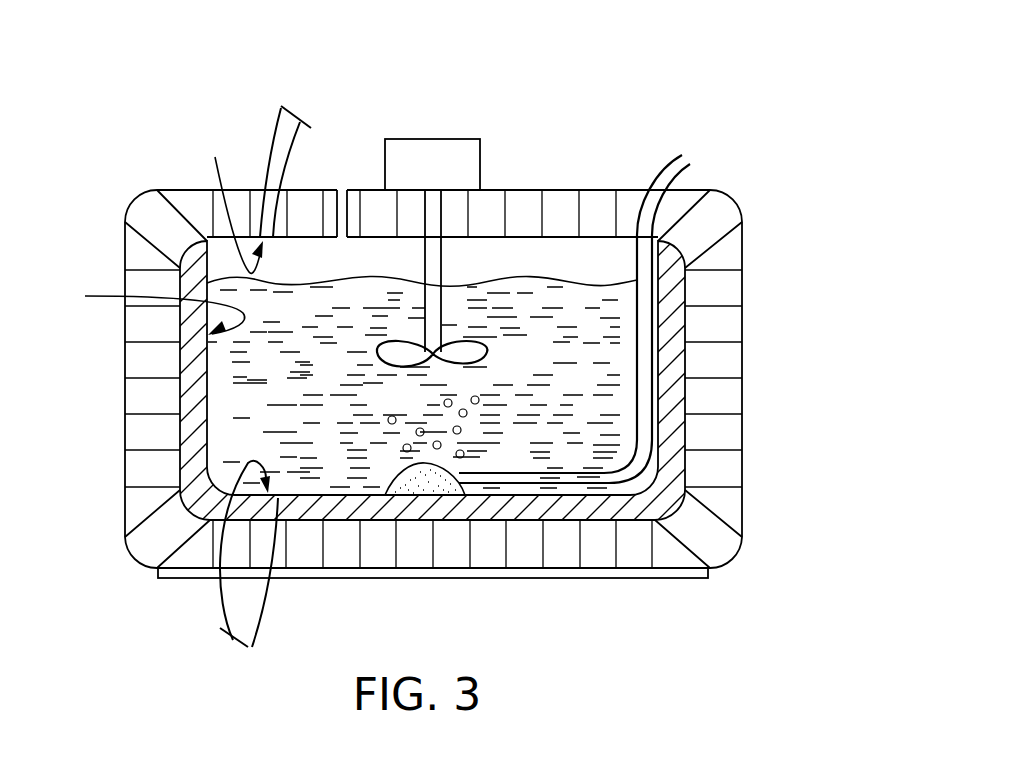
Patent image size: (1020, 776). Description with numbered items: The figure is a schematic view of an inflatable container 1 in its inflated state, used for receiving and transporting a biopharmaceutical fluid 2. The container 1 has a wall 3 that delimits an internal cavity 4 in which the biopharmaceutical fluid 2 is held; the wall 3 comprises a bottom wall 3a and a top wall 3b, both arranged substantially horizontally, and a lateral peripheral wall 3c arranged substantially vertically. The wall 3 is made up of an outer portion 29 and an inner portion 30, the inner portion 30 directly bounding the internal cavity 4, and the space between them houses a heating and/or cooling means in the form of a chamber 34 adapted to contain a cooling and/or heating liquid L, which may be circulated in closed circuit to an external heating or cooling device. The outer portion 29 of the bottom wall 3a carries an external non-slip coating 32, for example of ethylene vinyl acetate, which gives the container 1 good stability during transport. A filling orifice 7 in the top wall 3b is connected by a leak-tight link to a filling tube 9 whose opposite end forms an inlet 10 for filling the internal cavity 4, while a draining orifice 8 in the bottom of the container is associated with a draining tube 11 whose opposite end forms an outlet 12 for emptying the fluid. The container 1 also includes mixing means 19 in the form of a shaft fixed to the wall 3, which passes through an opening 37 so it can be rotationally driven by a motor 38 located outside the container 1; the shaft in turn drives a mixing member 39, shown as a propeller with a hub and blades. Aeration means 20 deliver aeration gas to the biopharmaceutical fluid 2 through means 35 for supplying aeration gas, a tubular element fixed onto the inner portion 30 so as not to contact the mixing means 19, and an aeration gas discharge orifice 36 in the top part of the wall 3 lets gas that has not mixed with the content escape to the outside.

The container 1 is at (775, 435).
The biopharmaceutical fluid 2 is at (282, 391).
The wall 3 is at (718, 471).
The bottom wall 3a is at (562, 570).
The top wall 3b is at (603, 190).
The lateral peripheral wall 3c is at (742, 292).
The internal cavity 4 is at (242, 440).
The filling orifice 7 is at (234, 200).
The draining orifice 8 is at (232, 472).
The filling tube 9 is at (268, 152).
The inlet 10 is at (297, 107).
The draining tube 11 is at (265, 612).
The outlet 12 is at (224, 641).
The mixing means 19 is at (442, 282).
The aeration means 20 is at (442, 498).
The outer portion 29 is at (123, 348).
The inner portion 30 is at (144, 307).
The non-slip coating 32 is at (677, 580).
The chamber 34 is at (673, 389).
The means for supplying aeration gas 35 is at (640, 297).
The aeration gas discharge orifice 36 is at (343, 188).
The opening 37 is at (442, 210).
The motor 38 is at (430, 160).
The mixing member 39 is at (470, 357).
The cooling and/or heating liquid L is at (673, 343).